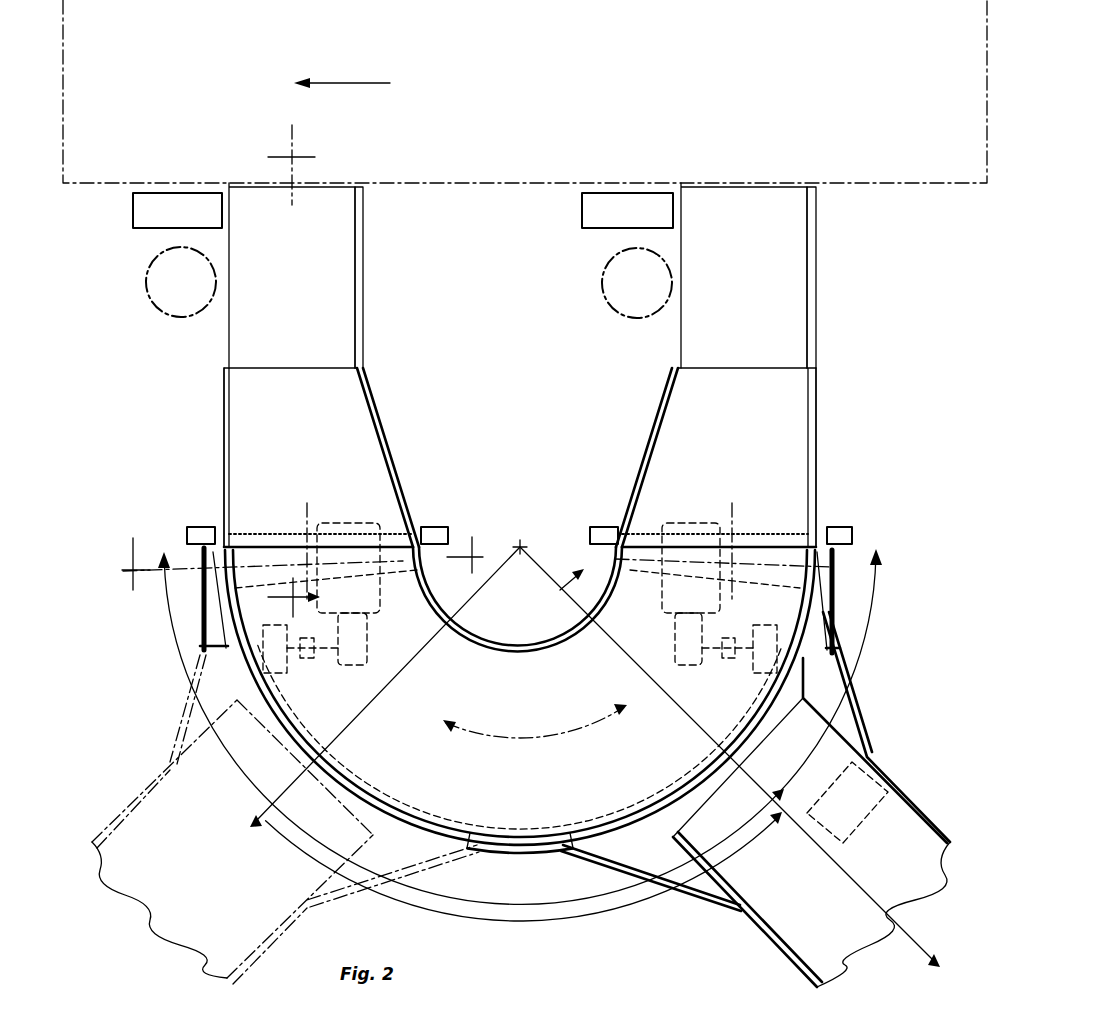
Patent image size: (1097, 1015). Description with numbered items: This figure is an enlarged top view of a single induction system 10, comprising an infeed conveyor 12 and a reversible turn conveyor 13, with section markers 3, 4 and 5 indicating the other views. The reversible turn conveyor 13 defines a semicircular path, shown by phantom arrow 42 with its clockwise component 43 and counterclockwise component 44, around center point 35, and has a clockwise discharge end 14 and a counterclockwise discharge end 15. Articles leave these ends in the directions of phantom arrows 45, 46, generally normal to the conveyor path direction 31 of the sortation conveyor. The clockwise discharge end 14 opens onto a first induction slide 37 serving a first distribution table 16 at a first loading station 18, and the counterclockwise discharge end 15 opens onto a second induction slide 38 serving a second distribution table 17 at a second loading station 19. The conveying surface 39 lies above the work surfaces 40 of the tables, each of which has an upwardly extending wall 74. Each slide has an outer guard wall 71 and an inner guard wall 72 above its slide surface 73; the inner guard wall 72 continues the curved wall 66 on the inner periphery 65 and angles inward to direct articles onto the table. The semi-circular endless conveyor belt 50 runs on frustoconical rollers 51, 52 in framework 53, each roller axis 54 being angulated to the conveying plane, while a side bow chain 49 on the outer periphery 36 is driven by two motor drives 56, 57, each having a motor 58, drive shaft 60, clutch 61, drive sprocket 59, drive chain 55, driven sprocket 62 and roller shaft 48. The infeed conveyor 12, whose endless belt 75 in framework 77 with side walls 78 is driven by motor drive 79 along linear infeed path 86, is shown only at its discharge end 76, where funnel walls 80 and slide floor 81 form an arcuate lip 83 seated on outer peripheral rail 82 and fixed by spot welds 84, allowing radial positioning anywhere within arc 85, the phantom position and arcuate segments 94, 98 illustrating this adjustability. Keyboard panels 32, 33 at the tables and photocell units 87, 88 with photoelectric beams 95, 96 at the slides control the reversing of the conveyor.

The induction system 10 is at (578, 955).
The infeed conveyor 12 is at (905, 886).
The reversible turn conveyor 13 is at (533, 850).
The clockwise discharge end 14 is at (280, 545).
The counterclockwise discharge end 15 is at (750, 545).
The first distribution table 16 is at (262, 315).
The second distribution table 17 is at (798, 236).
The first loading station 18 is at (181, 282).
The second loading station 19 is at (637, 283).
The conveyor path direction 31 is at (366, 82).
The first operator-controlled keyboard panel 32 is at (177, 210).
The second operator-controlled keyboard panel 33 is at (627, 210).
The center point 35 is at (523, 544).
The outer periphery 36 is at (550, 851).
The first induction slide 37 is at (252, 456).
The second induction slide 38 is at (800, 394).
The conveying surface 39 is at (537, 690).
The work surfaces 40 is at (522, 275).
The phantom arrow 42 is at (548, 746).
The clockwise component 43 is at (449, 732).
The counterclockwise component 44 is at (626, 730).
The phantom arrow 45 is at (308, 505).
The phantom arrow 46 is at (733, 504).
The roller shaft 48 is at (212, 558).
The side bow chain 49 is at (363, 777).
The endless conveyor belt 50 is at (532, 712).
The roller 51 is at (386, 575).
The roller 52 is at (749, 582).
The framework 53 is at (385, 800).
The roller axis 54 is at (418, 580).
The drive chain 55 is at (218, 600).
The motor drive 56 is at (405, 655).
The motor drive 57 is at (657, 645).
The motor 58 is at (372, 520).
The drive sprocket 59 is at (212, 660).
The drive shaft 60 is at (310, 665).
The clutch 61 is at (288, 668).
The driven sprocket 62 is at (213, 576).
The inner periphery 65 is at (500, 660).
The curved wall 66 is at (525, 650).
The outer guard wall 71 is at (229, 422).
The inner guard wall 72 is at (384, 430).
The slide surface 73 is at (520, 457).
The upwardly extending wall 74 is at (366, 292).
The endless belt 75 is at (825, 907).
The discharge end 76 is at (712, 788).
The framework 77 is at (945, 822).
The side walls 78 is at (925, 812).
The motor drive 79 is at (866, 830).
The funnel walls 80 is at (846, 680).
The slide floor 81 is at (740, 740).
The outer peripheral rail 82 is at (558, 851).
The arcuate lip 83 is at (742, 752).
The spot welds 84 is at (690, 790).
The arc 85 is at (524, 876).
The linear infeed path 86 is at (790, 858).
The first photocell unit 87 is at (180, 524).
The second photocell unit 88 is at (866, 530).
The arcuate segment 94 is at (862, 646).
The photoelectric beam 95 is at (405, 520).
The photoelectric beam 96 is at (660, 522).
The arcuate segment 98 is at (520, 729).
The section line 3- 3 is at (595, 767).
The section line 4- 4 is at (288, 371).
The section line 5- 5 is at (299, 558).